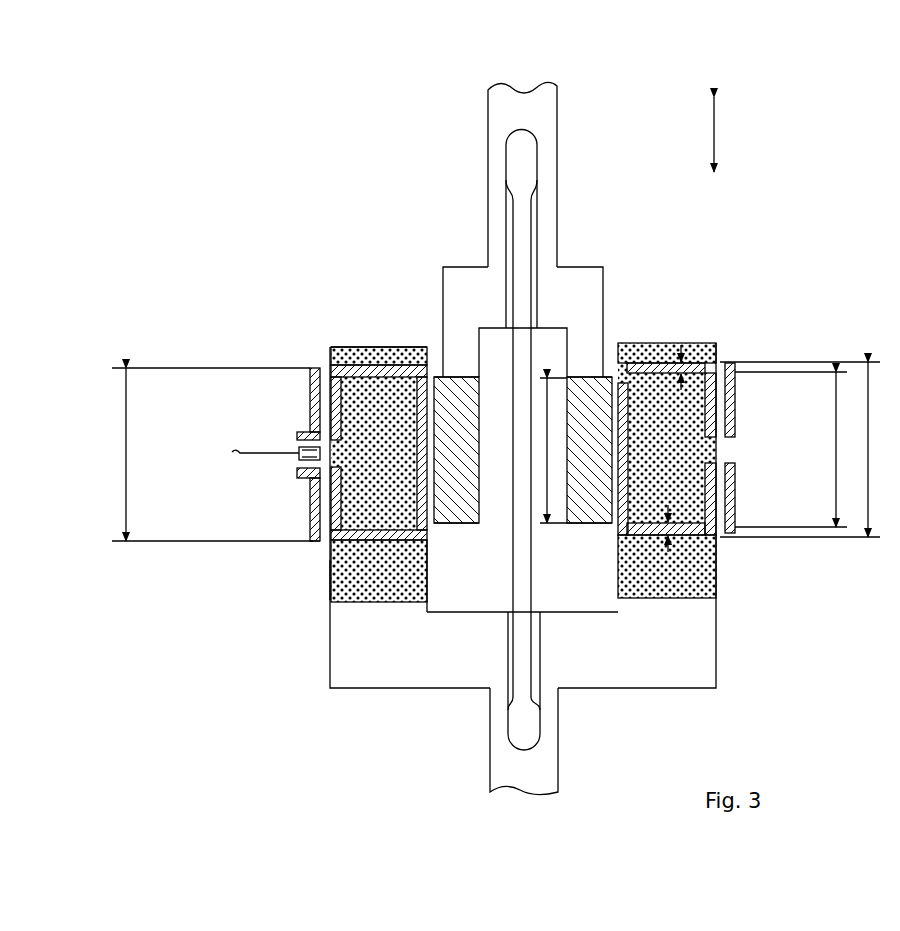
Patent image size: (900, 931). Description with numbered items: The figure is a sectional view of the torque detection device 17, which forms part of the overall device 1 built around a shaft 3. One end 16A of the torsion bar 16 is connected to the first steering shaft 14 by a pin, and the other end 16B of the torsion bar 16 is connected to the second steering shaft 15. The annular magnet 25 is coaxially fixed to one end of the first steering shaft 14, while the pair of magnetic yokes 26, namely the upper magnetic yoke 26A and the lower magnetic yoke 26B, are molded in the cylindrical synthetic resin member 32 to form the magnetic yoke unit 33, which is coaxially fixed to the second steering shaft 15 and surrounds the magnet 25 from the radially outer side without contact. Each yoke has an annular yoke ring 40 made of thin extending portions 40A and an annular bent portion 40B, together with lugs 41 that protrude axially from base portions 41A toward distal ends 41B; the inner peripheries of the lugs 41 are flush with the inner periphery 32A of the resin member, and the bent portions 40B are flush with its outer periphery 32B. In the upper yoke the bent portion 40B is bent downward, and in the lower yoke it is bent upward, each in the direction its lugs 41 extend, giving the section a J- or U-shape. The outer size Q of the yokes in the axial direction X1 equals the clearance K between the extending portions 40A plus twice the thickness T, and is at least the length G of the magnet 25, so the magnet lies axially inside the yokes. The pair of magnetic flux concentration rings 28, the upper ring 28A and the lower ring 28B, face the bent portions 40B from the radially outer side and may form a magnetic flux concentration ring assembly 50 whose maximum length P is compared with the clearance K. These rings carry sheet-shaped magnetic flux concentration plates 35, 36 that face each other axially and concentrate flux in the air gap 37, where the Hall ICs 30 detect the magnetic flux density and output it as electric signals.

The gas sensor 1 is at (455, 122).
The shaft 3 is at (568, 438).
The first steering shaft 14 is at (557, 113).
The second steering shaft 15 is at (560, 770).
The torsion bar 16 is at (527, 298).
The one end of the torsion bar 16A is at (530, 155).
The other end of the torsion bar 16B is at (530, 723).
The torque detection device 17 is at (352, 343).
The magnet 25 is at (470, 378).
The magnetic yokes 26 is at (543, 458).
The upper magnetic yoke 26A is at (396, 372).
The lower magnetic yoke 26B is at (368, 541).
The magnetic flux concentration rings 28 is at (735, 388).
The upper magnetic flux concentration ring 28A is at (312, 372).
The lower magnetic flux concentration ring 28B is at (312, 526).
The Hall ICs 30 is at (227, 430).
The synthetic resin member 32 is at (372, 590).
The inner periphery of the synthetic resin member 32A is at (427, 580).
The outer periphery of the synthetic resin member 32B is at (330, 578).
The magnetic yoke unit 33 is at (722, 586).
The magnetic flux concentration plate 35 is at (300, 432).
The magnetic flux concentration plate 36 is at (298, 474).
The air gap 37 is at (300, 460).
The yoke ring 40 is at (519, 476).
The extending portions 40A is at (392, 375).
The bent portion 40B is at (750, 482).
The lugs 41 is at (440, 425).
The base portion of the lug 41A is at (433, 378).
The distal end of the lug 41B is at (422, 518).
The magnetic flux concentration ring assembly 50 is at (316, 544).
The length of the magnet G is at (545, 440).
The clearance K is at (791, 449).
The maximum length of the magnetic flux concentration ring assembly P is at (206, 454).
The outer size of the magnetic yokes Q is at (800, 449).
The thickness of the extending portion T is at (683, 360).
The axial direction X1 is at (722, 135).